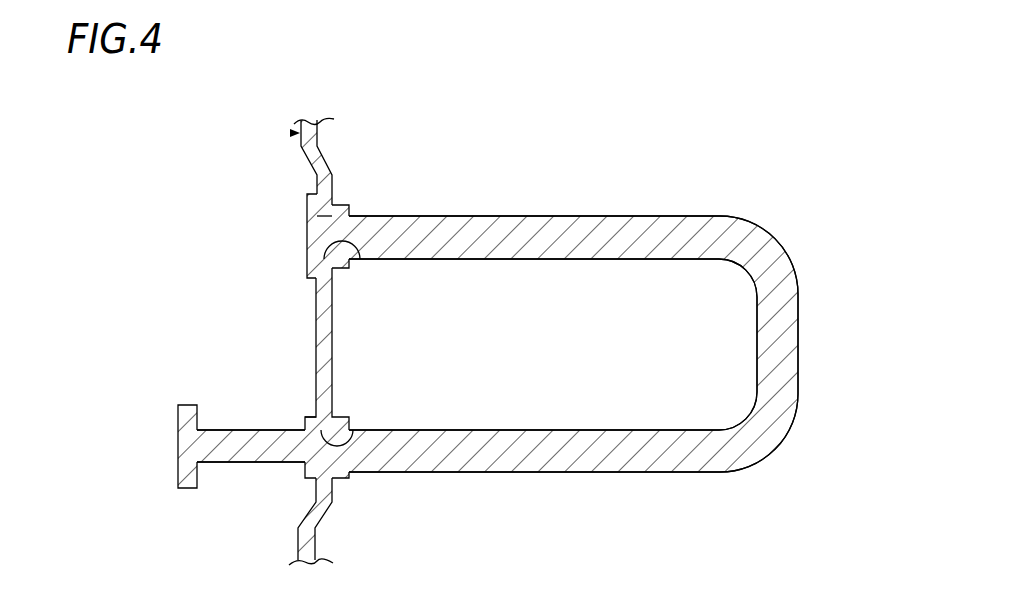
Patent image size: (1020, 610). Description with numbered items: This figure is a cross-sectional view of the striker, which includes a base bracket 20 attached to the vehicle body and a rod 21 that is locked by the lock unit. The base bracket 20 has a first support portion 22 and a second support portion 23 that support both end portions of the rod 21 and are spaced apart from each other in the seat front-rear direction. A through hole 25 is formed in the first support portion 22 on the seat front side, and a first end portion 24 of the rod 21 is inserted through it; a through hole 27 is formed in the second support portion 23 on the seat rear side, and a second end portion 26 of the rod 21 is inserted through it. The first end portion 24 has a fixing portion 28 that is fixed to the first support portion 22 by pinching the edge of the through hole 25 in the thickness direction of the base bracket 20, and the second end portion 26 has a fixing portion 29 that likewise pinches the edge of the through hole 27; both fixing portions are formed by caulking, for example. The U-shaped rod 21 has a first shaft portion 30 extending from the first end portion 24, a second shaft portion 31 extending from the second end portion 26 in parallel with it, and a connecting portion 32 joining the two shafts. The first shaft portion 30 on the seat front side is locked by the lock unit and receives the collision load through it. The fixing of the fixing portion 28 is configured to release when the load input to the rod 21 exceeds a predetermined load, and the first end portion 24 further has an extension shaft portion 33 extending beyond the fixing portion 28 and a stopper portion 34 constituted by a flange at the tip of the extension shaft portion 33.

The base bracket 20 is at (291, 133).
The rod 21 is at (791, 238).
The first support portion 22 is at (332, 496).
The second support portion 23 is at (336, 186).
The first end portion 24 is at (168, 443).
The through hole 25 is at (351, 428).
The second end portion 26 is at (296, 234).
The through hole 27 is at (360, 259).
The fixing portion 28 is at (307, 418).
The fixing portion 29 is at (307, 197).
The first shaft portion 30 is at (610, 458).
The second shaft portion 31 is at (620, 228).
The connecting portion 32 is at (782, 343).
The extension shaft portion 33 is at (243, 458).
The stopper portion 34 is at (180, 407).